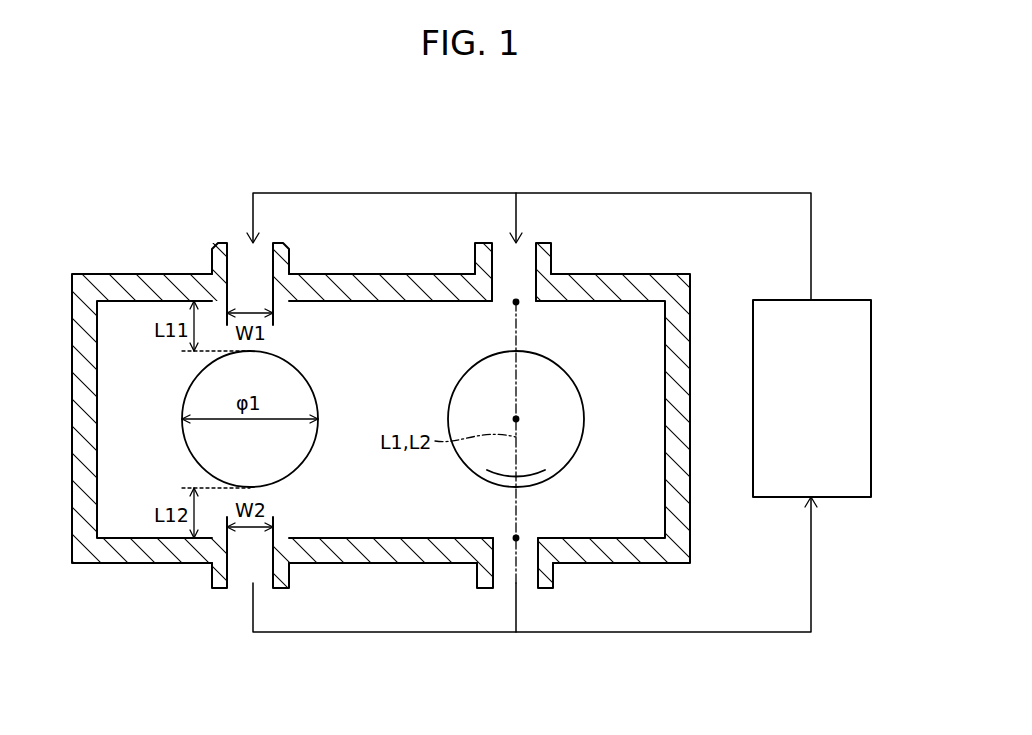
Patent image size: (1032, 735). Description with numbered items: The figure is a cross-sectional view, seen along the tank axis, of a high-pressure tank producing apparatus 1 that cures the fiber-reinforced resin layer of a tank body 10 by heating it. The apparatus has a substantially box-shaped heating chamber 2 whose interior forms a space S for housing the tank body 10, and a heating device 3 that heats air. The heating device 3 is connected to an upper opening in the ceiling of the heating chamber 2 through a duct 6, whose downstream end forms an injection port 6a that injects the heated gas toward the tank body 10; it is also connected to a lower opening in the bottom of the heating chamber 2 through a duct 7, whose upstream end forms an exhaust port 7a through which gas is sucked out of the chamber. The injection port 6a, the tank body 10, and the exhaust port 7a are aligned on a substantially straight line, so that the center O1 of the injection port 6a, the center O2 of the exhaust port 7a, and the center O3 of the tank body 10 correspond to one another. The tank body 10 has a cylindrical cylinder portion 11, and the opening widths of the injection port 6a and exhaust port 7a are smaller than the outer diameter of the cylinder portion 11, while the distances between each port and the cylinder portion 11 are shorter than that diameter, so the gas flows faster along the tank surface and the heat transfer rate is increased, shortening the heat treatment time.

The high-pressure tank producing apparatus 1 is at (812, 146).
The heating chamber 2 is at (690, 283).
The heating device 3 is at (871, 390).
The duct 6 is at (546, 272).
The injection port 6a is at (524, 311).
The duct 7 is at (548, 577).
The exhaust port 7a is at (521, 520).
The tank body 10 is at (305, 371).
The cylinder portion 11 is at (560, 471).
The space S is at (100, 414).
The center of the injection port O1 is at (513, 304).
The center of the exhaust port O2 is at (513, 535).
The center of the tank body O3 is at (514, 416).